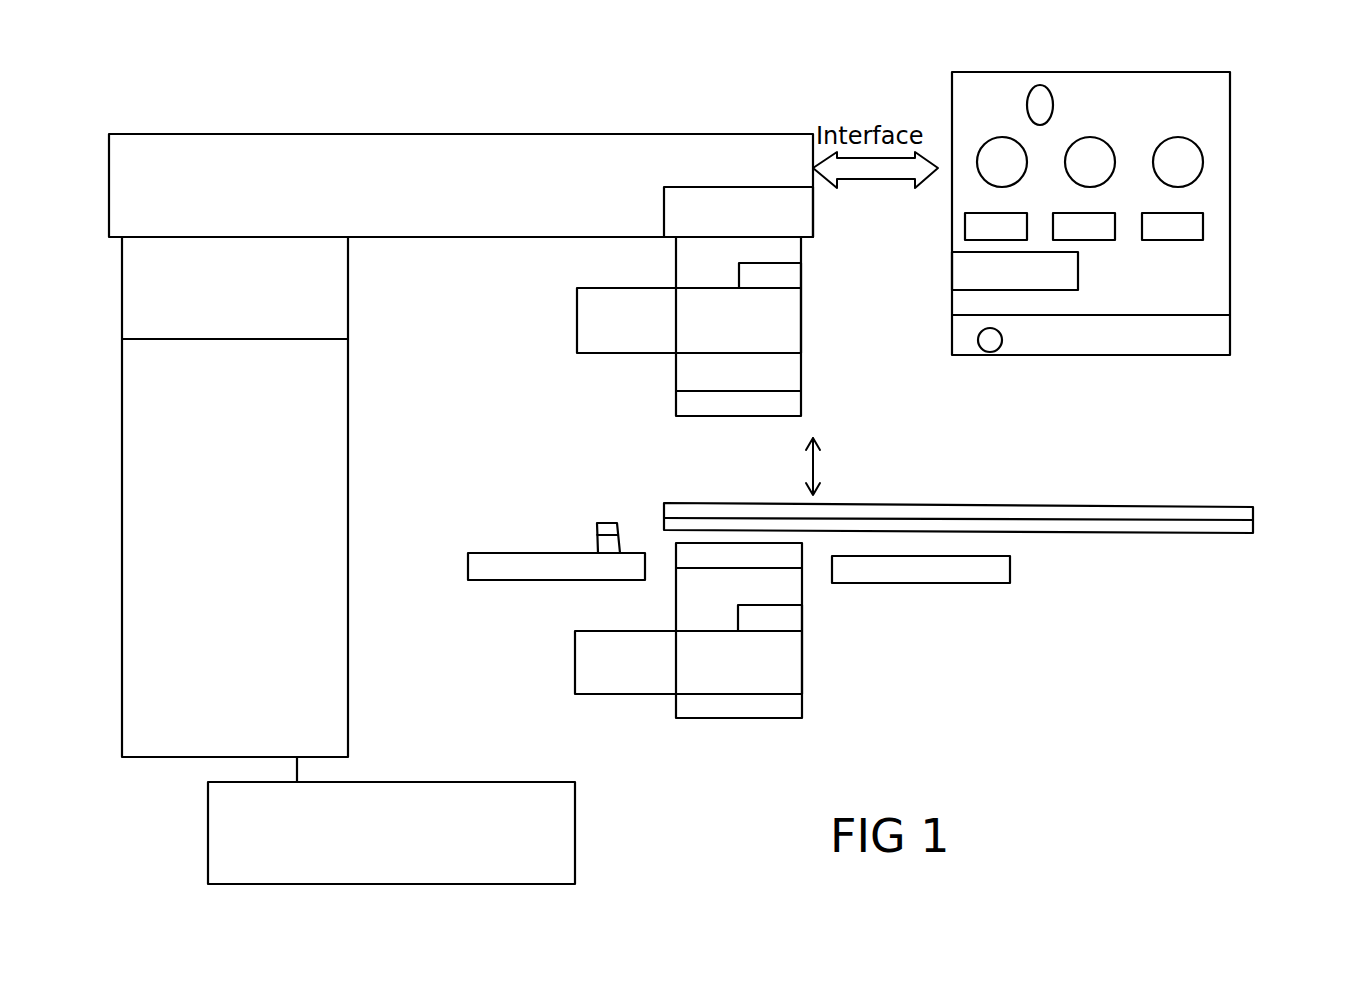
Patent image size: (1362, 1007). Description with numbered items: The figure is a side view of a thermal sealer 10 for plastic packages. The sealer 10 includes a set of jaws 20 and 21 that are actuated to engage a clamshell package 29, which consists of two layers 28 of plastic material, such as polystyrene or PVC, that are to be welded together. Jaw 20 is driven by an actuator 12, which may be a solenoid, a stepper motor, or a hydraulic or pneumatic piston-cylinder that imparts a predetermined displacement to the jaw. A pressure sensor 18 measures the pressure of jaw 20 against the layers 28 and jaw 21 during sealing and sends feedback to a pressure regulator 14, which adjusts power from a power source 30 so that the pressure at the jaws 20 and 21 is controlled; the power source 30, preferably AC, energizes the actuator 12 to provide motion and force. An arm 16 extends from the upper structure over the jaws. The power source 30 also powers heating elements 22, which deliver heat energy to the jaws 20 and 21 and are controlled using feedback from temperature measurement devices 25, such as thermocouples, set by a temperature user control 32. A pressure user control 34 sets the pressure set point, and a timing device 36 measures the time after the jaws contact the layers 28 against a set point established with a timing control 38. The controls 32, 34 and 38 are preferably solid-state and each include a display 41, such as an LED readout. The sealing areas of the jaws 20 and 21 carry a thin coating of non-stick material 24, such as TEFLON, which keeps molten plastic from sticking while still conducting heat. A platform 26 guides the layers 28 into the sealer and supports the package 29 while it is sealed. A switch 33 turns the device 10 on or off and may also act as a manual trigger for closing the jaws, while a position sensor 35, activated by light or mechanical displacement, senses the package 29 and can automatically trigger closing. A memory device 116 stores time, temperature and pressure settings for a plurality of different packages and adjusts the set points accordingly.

The thermal sealer 10 is at (478, 64).
The actuator 12 is at (235, 548).
The pressure regulator 14 is at (244, 311).
The horizontal arm 16 is at (512, 209).
The pressure sensor 18 is at (750, 228).
The jaw 20 is at (801, 243).
The jaw 21 is at (802, 592).
The heating elements 22 is at (785, 322).
The non-stick material 24 is at (793, 405).
The temperature measurement devices 25 is at (793, 270).
The platform 26 is at (492, 580).
The layers 28 is at (1028, 507).
The clamshell package 29 is at (1246, 500).
The power source 30 is at (505, 846).
The user control 32 is at (1203, 158).
The switch 33 is at (1042, 85).
The user control 34 is at (1112, 143).
The sensor 35 is at (600, 523).
The timing device 36 is at (1083, 277).
The timing control 38 is at (985, 142).
The display 41 is at (1142, 213).
The memory device 116 is at (1215, 330).